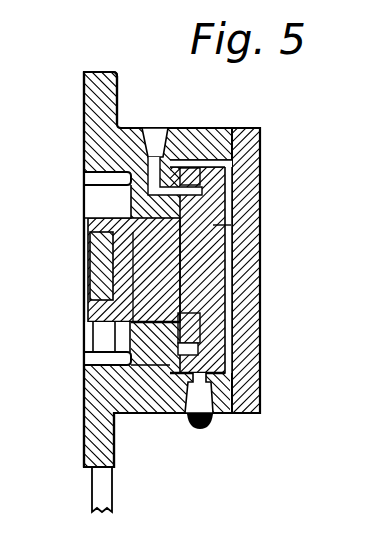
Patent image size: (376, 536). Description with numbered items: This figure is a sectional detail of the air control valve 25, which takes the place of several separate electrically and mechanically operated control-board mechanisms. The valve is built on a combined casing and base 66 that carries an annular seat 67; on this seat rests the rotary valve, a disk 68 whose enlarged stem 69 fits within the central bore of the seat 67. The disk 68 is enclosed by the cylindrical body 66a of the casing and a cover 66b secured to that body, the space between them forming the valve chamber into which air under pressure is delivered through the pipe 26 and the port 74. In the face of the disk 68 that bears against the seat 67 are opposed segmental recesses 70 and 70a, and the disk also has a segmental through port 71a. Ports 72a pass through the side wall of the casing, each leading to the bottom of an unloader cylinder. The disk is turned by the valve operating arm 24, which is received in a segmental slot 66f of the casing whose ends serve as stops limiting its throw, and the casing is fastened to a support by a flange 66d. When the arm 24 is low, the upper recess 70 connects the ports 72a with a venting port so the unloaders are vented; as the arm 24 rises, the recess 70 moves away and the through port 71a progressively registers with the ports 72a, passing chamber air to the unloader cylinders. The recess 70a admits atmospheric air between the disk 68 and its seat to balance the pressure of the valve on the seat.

The valve 25 is at (100, 137).
The combined casing and base 66 is at (123, 133).
The cylindrical body 66a is at (210, 135).
The cover 66b is at (250, 288).
The flange 66d is at (101, 435).
The segmental slot 66f is at (96, 207).
The disk 68 is at (245, 215).
The enlarged stem 69 is at (122, 250).
The segmental recess 70 is at (160, 193).
The segmental recess 70a is at (226, 344).
The segmental port 71a is at (228, 267).
The ports 72a is at (158, 133).
The port 74 is at (200, 398).
The pipe 26 is at (216, 413).
The arm 24 is at (87, 278).
The annular seat 67 is at (128, 340).